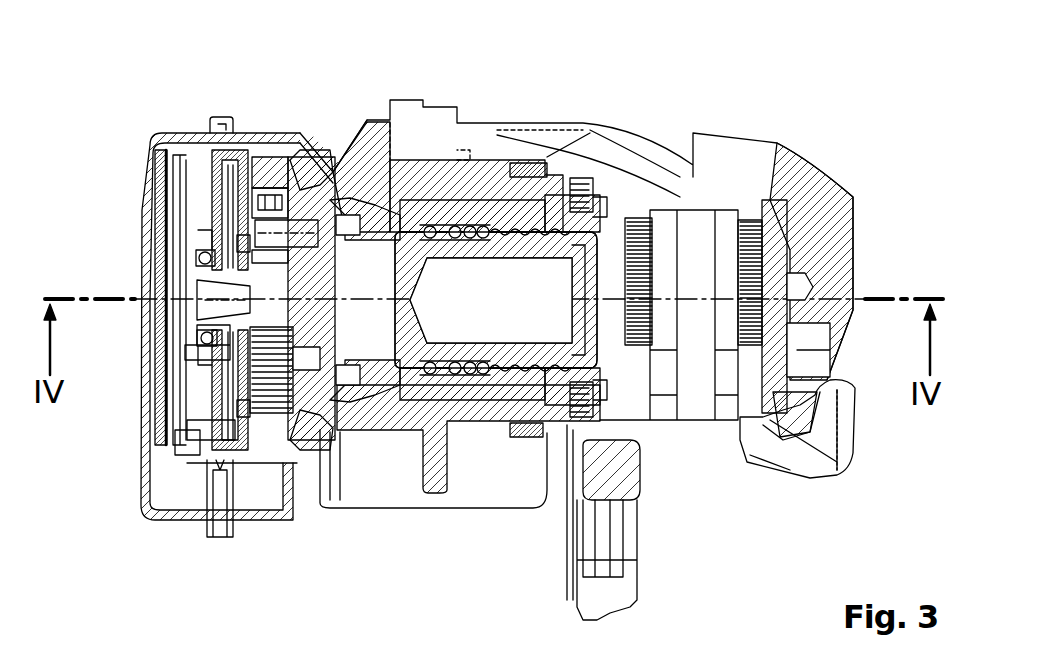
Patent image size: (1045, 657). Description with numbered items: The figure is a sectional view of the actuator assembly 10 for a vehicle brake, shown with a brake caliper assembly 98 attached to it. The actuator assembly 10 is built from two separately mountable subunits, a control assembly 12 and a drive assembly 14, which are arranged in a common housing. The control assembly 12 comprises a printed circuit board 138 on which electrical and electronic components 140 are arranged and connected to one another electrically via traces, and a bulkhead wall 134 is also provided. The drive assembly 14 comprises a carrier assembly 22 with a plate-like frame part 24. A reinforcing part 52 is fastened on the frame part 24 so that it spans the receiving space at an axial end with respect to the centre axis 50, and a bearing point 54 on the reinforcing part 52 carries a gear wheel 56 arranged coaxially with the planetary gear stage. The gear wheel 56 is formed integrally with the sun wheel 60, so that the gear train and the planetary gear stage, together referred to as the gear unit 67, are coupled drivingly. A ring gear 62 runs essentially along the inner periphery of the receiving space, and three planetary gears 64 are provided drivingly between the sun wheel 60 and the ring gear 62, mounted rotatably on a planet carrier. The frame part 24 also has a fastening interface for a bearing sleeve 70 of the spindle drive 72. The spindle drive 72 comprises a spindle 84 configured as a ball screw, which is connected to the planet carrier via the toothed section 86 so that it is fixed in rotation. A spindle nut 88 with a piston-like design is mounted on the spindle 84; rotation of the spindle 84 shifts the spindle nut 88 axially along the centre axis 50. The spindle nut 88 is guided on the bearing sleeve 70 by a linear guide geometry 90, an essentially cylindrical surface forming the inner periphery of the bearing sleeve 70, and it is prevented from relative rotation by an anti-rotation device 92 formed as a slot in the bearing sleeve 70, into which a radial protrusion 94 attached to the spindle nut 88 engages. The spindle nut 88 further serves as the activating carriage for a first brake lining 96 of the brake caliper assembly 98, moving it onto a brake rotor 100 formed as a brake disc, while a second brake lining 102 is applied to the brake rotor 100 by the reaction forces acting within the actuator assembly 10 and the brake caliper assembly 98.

The actuator assembly 10 is at (505, 90).
The control assembly 12 is at (146, 88).
The drive assembly 14 is at (380, 88).
The carrier assembly 22 is at (273, 150).
The frame part 24 is at (293, 167).
The centre axis 50 is at (820, 299).
The reinforcing part 52 is at (278, 299).
The bearing point 54 is at (200, 254).
The gear wheel 56 is at (233, 173).
The sun wheel 60 is at (308, 315).
The ring gear 62 is at (277, 417).
The planetary gears 64 is at (332, 382).
The gear unit 67 is at (214, 112).
The bearing sleeve 70 is at (487, 390).
The spindle drive 72 is at (537, 243).
The spindle 84 is at (637, 210).
The toothed section 86 is at (213, 356).
The spindle nut 88 is at (593, 373).
The linear guide geometry 90 is at (448, 398).
The anti-rotation device 92 is at (511, 220).
The radial protrusion 94 is at (489, 200).
The first brake lining 96 is at (645, 188).
The brake caliper assembly 98 is at (833, 152).
The brake rotor 100 is at (695, 395).
The second brake lining 102 is at (763, 257).
The bulkhead wall 134 is at (240, 418).
The printed circuit board 138 is at (167, 200).
The electrical and electronic components 140 is at (176, 293).